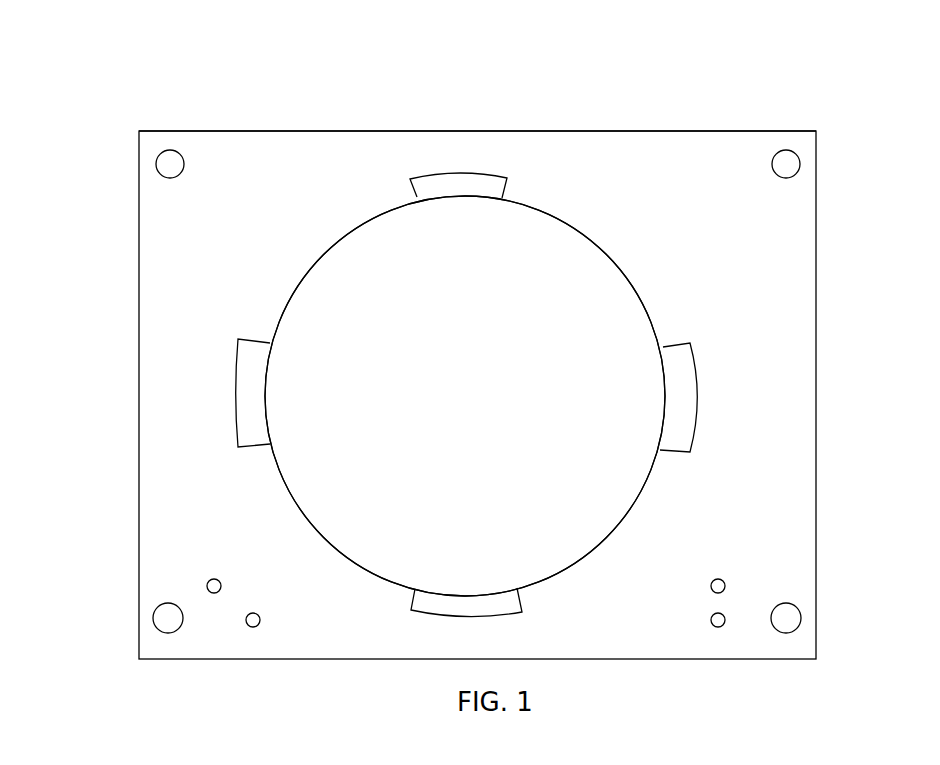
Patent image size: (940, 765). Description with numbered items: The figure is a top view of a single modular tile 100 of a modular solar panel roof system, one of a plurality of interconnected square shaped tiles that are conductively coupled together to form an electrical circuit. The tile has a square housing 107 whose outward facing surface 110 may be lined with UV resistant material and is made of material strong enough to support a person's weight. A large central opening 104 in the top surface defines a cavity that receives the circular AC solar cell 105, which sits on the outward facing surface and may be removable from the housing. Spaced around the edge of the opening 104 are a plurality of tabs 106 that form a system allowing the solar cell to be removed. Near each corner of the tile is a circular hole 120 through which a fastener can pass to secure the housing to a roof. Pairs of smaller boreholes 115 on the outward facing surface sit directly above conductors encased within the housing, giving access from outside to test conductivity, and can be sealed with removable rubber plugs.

The modular tile 100 is at (75, 108).
The opening 104 is at (335, 505).
The circular AC solar cell 105 is at (598, 275).
The tabs 106 is at (462, 170).
The housing 107 is at (383, 130).
The outward facing surface 110 is at (594, 158).
The boreholes 115 is at (262, 620).
The holes 120 is at (186, 164).